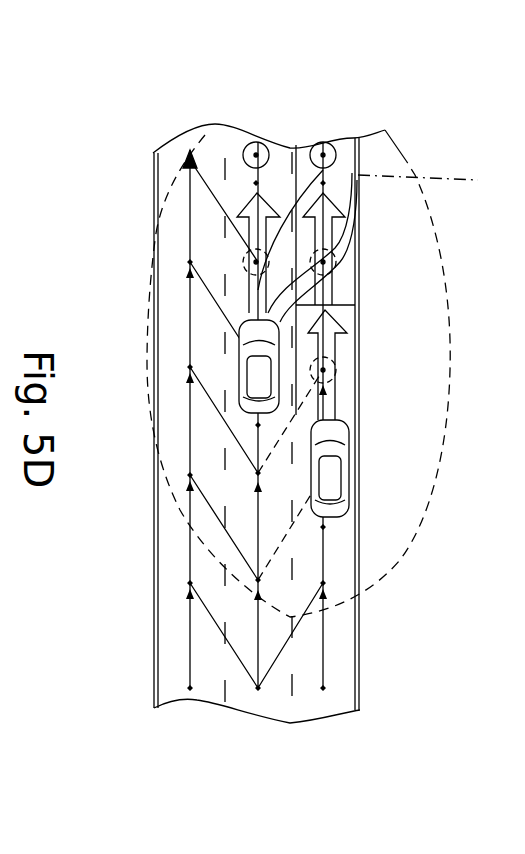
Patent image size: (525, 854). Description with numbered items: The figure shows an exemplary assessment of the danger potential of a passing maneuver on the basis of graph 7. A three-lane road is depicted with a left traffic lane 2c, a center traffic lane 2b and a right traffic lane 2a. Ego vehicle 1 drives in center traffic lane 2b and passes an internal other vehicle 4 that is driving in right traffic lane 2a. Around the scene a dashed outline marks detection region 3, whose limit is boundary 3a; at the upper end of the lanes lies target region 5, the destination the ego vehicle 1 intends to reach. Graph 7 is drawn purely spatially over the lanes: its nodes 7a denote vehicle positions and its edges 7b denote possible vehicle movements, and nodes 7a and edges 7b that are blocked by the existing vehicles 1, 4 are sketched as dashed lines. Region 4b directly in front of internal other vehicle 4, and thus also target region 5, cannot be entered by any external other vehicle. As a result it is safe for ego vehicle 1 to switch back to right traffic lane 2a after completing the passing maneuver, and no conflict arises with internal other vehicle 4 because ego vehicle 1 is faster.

The ego vehicle 1 is at (240, 355).
The right traffic lane 2a is at (303, 145).
The center traffic lane 2b is at (235, 145).
The left traffic lane 2c is at (158, 165).
The detection region 3 is at (383, 300).
The boundary of detection region 3a is at (434, 180).
The internal other vehicle 4 is at (348, 490).
The region directly in front of internal other vehicle 4b is at (358, 372).
The target region 5 is at (408, 160).
The graph 7 is at (243, 687).
The nodes 7a is at (360, 247).
The edges 7b is at (365, 565).